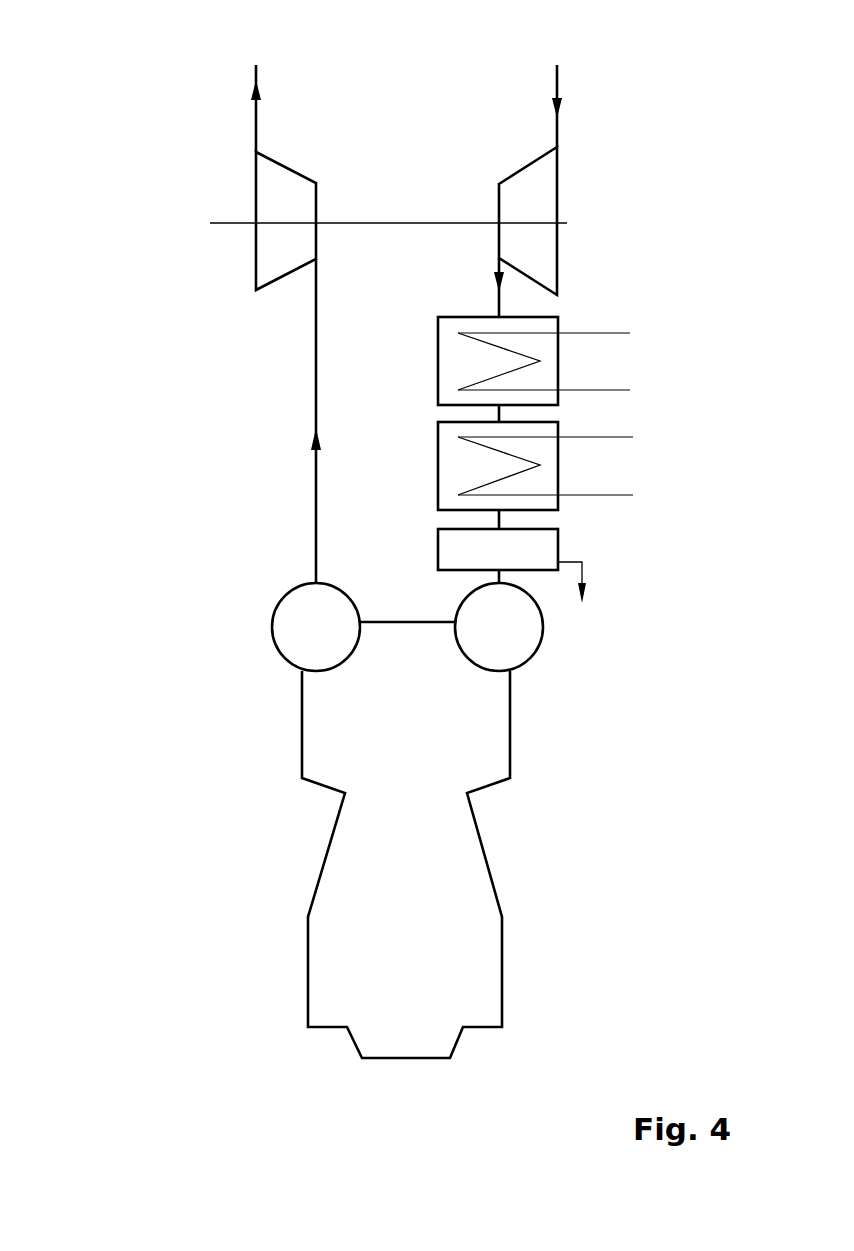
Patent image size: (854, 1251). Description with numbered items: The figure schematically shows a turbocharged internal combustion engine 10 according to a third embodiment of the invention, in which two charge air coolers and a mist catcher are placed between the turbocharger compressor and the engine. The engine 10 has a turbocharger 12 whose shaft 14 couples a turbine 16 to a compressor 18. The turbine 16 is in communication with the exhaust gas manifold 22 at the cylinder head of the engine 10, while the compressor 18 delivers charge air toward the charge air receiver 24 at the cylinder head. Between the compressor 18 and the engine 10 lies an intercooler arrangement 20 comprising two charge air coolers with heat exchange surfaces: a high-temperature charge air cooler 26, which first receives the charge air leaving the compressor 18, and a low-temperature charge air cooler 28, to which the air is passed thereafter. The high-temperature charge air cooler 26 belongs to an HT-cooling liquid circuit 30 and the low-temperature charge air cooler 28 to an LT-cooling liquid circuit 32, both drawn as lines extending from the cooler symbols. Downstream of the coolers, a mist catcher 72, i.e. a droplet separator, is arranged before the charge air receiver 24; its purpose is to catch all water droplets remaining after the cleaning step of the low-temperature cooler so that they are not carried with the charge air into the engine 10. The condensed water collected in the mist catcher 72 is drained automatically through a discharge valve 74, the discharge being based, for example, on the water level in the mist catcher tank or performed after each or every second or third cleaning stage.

The internal combustion engine 10 is at (427, 930).
The turbocharger 12 is at (218, 144).
The shaft 14 is at (387, 223).
The turbine 16 is at (310, 258).
The compressor 18 is at (548, 258).
The intercooler arrangement 20 is at (609, 297).
The exhaust gas manifold 22 is at (340, 637).
The charge air receiver 24 is at (523, 637).
The high-temperature charge air cooler 26 is at (463, 361).
The low-temperature charge air cooler 28 is at (472, 463).
The HT-cooling liquid circuit 30 is at (628, 332).
The LT-cooling liquid circuit 32 is at (578, 437).
The mist catcher 72 is at (530, 544).
The discharge valve 74 is at (590, 580).